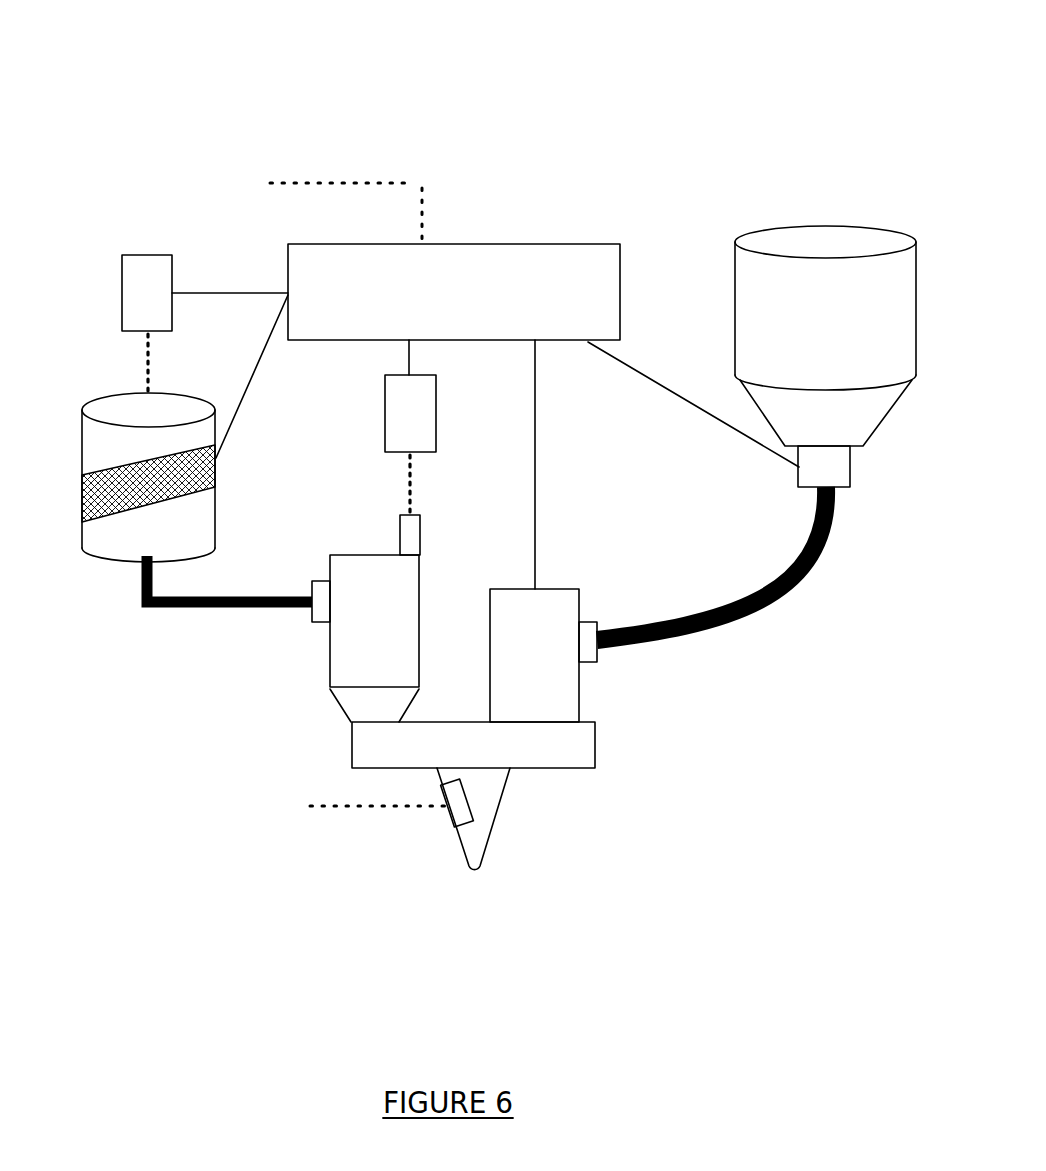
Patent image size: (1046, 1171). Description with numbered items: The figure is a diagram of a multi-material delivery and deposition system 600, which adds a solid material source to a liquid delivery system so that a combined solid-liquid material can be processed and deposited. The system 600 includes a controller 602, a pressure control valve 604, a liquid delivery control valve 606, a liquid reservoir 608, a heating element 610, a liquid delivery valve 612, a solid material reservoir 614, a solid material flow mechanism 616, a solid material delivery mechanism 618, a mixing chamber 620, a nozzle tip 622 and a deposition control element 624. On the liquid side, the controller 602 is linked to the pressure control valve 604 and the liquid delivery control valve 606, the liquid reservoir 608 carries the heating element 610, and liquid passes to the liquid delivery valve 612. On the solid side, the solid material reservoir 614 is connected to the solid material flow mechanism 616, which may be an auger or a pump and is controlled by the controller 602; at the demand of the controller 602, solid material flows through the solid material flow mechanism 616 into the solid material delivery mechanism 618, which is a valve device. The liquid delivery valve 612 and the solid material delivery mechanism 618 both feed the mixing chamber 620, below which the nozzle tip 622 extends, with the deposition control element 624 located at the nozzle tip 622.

The multi-material delivery and deposition system 600 is at (327, 59).
The controller 602 is at (454, 292).
The pressure control valve 604 is at (148, 303).
The liquid delivery control valve 606 is at (413, 418).
The liquid reservoir 608 is at (113, 438).
The heating element 610 is at (82, 486).
The liquid delivery valve 612 is at (283, 618).
The solid material reservoir 614 is at (825, 336).
The solid material flow mechanism 616 is at (825, 465).
The solid material delivery mechanism 618 is at (658, 604).
The mixing chamber 620 is at (473, 745).
The nozzle tip 622 is at (482, 848).
The deposition control element 624 is at (458, 793).